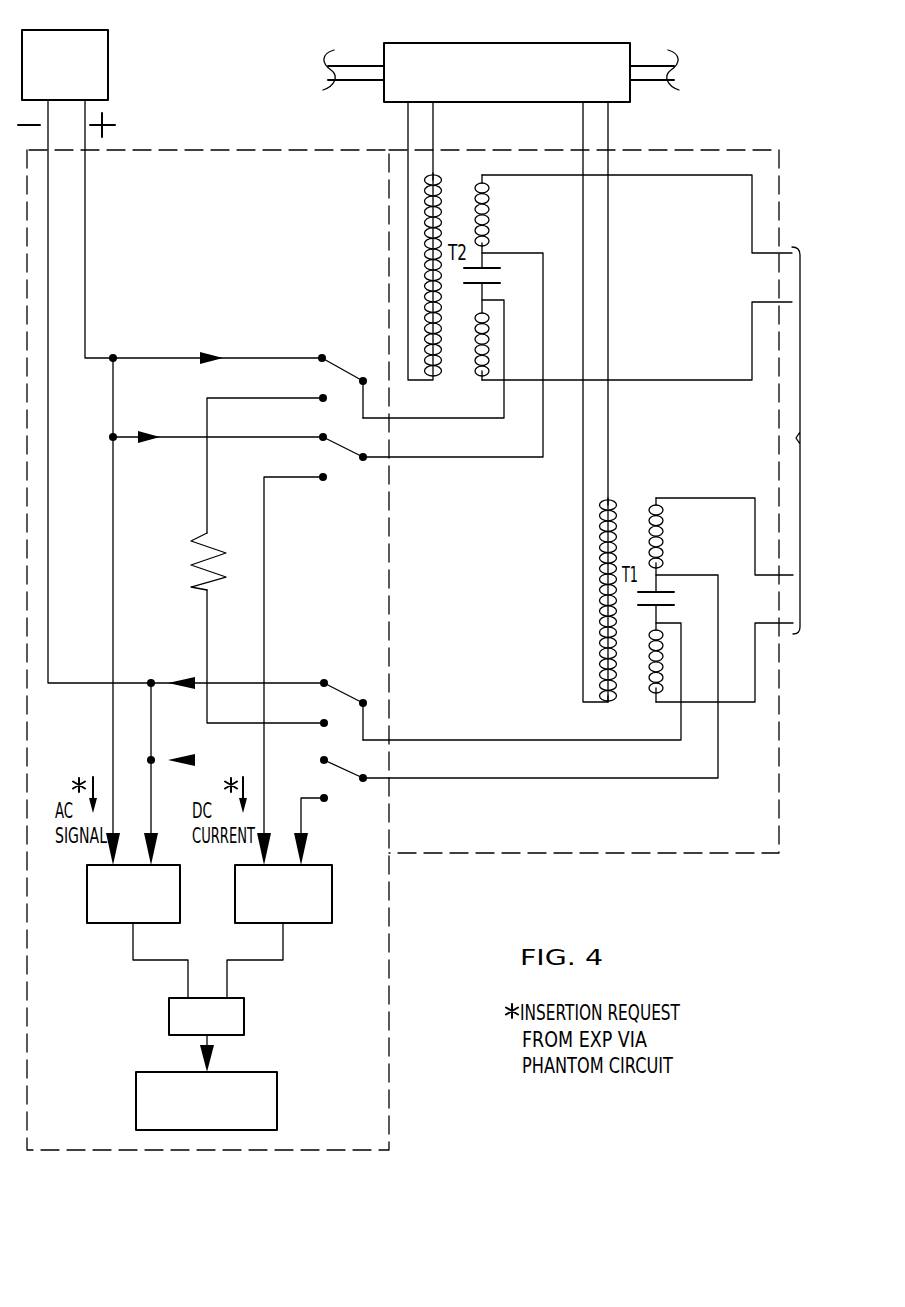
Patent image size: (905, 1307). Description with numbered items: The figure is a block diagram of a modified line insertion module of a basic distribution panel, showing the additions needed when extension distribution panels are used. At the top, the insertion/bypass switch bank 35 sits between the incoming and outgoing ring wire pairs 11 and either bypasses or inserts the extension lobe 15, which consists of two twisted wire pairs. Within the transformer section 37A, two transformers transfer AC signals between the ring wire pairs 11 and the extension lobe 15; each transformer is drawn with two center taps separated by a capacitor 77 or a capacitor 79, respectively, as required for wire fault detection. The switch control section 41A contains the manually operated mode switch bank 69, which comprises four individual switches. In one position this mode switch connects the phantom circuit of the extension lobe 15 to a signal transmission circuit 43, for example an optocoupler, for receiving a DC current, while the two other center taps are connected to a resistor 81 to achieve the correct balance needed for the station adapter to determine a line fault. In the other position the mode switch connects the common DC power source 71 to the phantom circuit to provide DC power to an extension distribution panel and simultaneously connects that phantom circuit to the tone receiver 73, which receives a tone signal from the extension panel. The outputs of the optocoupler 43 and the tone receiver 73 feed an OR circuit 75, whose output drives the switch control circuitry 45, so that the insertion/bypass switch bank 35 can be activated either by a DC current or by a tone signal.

The DC power source 71 is at (108, 58).
The insertion/bypass switch bank 35 is at (514, 42).
The ring wire pairs 11 is at (366, 33).
The transformer section 37A is at (736, 128).
The capacitor 79 is at (499, 276).
The capacitor 77 is at (672, 600).
The extension lobe 15 is at (789, 440).
The mode switch bank 69 is at (340, 348).
The resistor 81 is at (191, 559).
The tone receiver 73 is at (87, 884).
The signal transmission circuit 43 is at (332, 886).
The OR circuit 75 is at (244, 1016).
The switch control circuitry 45 is at (277, 1103).
The switch control section 41A is at (391, 929).